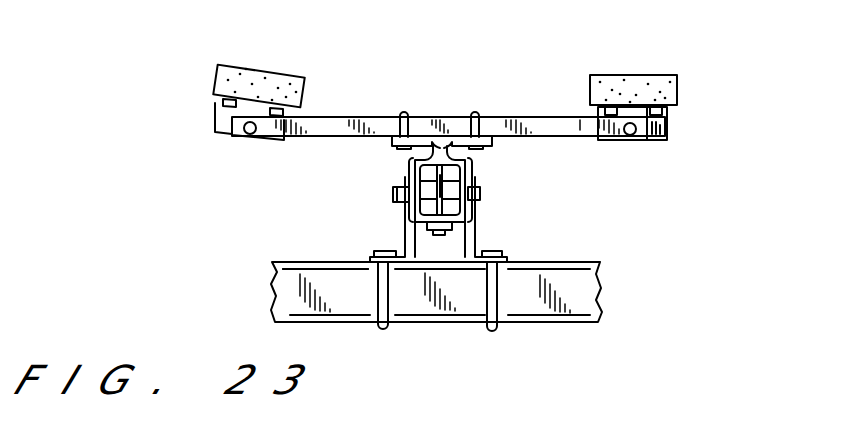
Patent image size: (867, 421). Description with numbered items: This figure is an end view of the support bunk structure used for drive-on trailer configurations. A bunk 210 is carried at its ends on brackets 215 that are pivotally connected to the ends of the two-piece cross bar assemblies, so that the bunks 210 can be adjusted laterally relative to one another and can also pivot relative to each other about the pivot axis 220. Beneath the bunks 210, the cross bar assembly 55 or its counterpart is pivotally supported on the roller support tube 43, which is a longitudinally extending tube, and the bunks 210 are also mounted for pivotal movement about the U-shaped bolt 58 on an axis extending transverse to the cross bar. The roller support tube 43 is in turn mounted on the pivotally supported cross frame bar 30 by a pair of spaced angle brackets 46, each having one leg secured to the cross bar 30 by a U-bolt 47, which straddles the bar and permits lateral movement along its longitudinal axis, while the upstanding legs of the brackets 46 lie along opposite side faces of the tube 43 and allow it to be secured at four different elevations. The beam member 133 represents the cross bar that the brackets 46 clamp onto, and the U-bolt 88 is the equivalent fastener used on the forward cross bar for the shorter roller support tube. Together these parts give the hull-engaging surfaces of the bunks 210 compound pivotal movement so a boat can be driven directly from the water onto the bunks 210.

The bunk 210 is at (213, 78).
The bracket 215 is at (215, 115).
The pivot axis 220 is at (243, 132).
The rail member (55 or 96) 55 is at (488, 143).
The roller support tube 43 is at (415, 165).
The U-shaped bolt 58 is at (437, 188).
The angle bracket 46 is at (407, 232).
The beam (133 or 134) 133 is at (548, 265).
The cross frame bar 30 is at (363, 325).
The U-bolt 47 is at (382, 330).
The U-bolt 88 is at (502, 305).